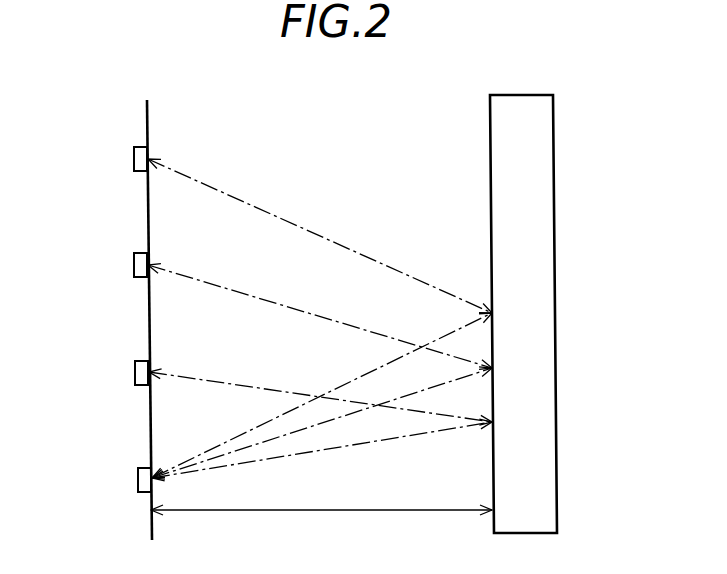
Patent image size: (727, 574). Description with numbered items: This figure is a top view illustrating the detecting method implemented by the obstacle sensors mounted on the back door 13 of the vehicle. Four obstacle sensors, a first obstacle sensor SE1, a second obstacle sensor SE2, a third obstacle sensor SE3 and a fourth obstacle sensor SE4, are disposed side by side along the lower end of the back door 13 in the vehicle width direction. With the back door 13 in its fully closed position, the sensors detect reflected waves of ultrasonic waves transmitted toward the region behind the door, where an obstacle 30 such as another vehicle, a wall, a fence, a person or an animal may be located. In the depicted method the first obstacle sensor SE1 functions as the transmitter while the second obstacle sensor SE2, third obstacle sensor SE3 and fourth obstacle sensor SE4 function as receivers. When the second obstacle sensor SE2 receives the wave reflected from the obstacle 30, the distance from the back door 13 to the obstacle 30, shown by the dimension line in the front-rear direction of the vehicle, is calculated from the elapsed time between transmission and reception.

The back door 13 is at (148, 130).
The obstacle 30 is at (556, 175).
The first obstacle sensor SE1 is at (138, 480).
The second obstacle sensor SE2 is at (135, 372).
The third obstacle sensor SE3 is at (134, 265).
The fourth obstacle sensor SE4 is at (134, 158).